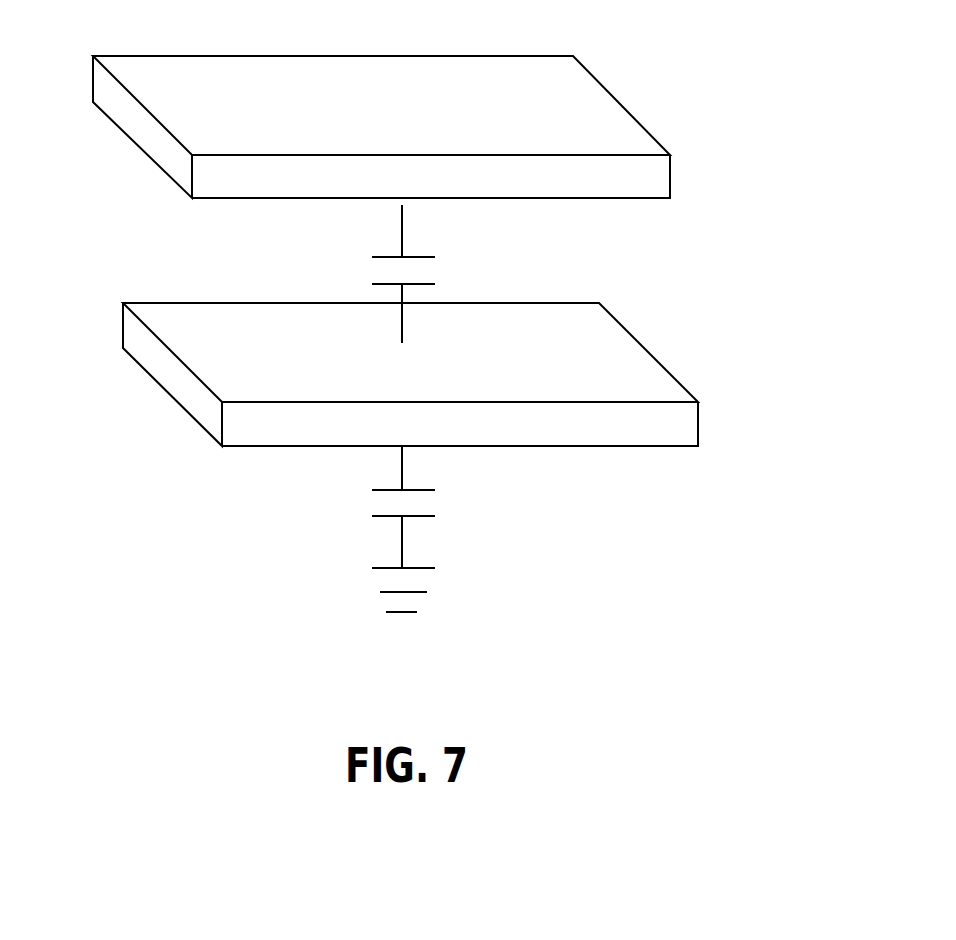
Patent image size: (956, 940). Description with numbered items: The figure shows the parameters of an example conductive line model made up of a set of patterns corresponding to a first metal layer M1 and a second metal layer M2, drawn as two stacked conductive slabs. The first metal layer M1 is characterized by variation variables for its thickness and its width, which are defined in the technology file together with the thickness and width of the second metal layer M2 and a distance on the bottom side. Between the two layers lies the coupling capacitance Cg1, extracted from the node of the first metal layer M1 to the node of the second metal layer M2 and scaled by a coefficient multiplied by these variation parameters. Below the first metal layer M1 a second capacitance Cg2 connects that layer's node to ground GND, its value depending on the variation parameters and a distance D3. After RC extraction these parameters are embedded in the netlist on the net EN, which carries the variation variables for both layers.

The metal 2 layer M2 is at (351, 127).
The metal 1 layer M1 is at (389, 374).
The net EN is at (192, 321).
The capacitor Cg1 is at (378, 274).
The capacitor Cg2 is at (378, 507).
The distance D3 is at (542, 495).
The ground GND is at (289, 570).